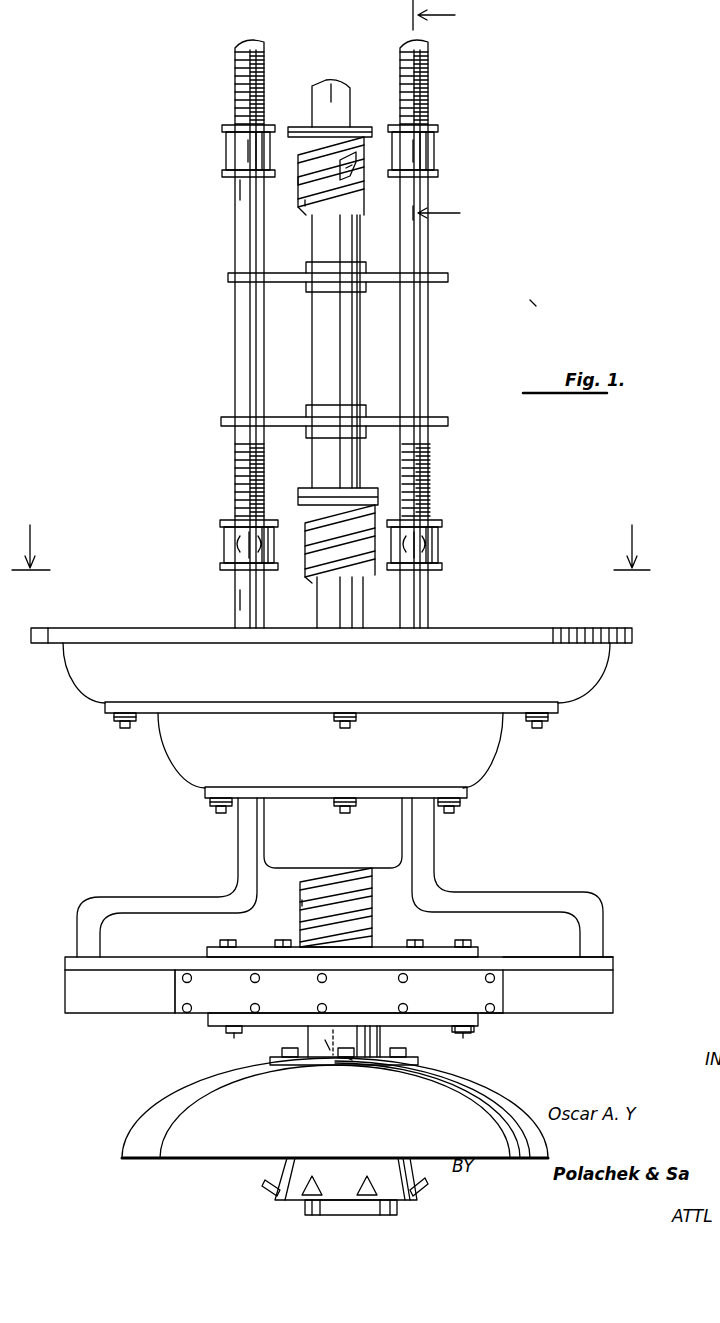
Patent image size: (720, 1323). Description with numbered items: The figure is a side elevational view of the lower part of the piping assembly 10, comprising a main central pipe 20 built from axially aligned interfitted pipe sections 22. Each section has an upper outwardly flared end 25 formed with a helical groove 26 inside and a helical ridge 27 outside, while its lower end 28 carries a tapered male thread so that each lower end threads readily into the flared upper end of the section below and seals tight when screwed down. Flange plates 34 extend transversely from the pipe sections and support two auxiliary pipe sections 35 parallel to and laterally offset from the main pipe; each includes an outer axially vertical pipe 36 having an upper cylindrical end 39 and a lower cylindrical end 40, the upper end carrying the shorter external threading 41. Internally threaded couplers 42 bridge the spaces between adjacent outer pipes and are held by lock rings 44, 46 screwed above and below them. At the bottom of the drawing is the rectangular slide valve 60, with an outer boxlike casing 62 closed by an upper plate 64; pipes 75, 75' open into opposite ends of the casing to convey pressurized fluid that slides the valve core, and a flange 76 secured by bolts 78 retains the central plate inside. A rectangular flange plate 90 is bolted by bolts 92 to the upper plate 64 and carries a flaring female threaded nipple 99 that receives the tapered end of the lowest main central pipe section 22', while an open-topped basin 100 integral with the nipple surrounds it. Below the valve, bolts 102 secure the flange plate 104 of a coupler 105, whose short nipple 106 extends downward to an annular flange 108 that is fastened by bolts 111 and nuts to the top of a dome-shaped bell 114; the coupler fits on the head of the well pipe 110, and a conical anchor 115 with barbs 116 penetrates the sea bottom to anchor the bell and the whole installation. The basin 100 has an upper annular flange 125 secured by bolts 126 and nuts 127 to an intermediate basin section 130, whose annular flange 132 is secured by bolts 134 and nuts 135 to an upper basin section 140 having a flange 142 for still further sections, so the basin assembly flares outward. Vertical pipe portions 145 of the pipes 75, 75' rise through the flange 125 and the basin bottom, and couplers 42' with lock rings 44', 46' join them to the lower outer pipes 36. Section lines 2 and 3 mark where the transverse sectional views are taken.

The section line 2- 2 is at (331, 535).
The section line 3- 3 is at (444, 112).
The piping assembly 10 is at (548, 295).
The main central pipe 20 is at (306, 236).
The pipe section 22 is at (341, 236).
The lowest main central pipe section 22' is at (317, 602).
The upper outwardly flared end 25 is at (310, 182).
The helical groove 26 is at (358, 160).
The helical ridge 27 is at (312, 203).
The lower end 28 is at (322, 540).
The flange plate 34 is at (440, 282).
The auxiliary pipe section 35 is at (232, 385).
The outer axially vertical pipe 36 is at (242, 340).
The upper cylindrical end 39 is at (250, 190).
The lower cylindrical end 40 is at (234, 510).
The upper threading 41 is at (242, 90).
The coupler 42 is at (317, 151).
The coupler 42' is at (315, 545).
The lock ring 44 is at (304, 122).
The lock ring 44' is at (286, 524).
The lock ring 46 is at (301, 166).
The lock ring 46' is at (291, 568).
The slide valve 60 is at (505, 1020).
The boxlike casing 62 is at (596, 988).
The upper plate 64 is at (526, 963).
The pipe 75 is at (525, 877).
The pipe 75' is at (167, 877).
The flange 76 is at (214, 1000).
The bolts 78 is at (240, 1034).
The rectangular flange plate 90 is at (400, 936).
The bolts 92 is at (428, 947).
The nipple 99 is at (364, 893).
The basin 100 is at (376, 832).
The bolts 102 is at (456, 1028).
The flange plate 104 is at (428, 1026).
The coupler 105 is at (328, 1056).
The short nipple 106 is at (380, 1036).
The annular flange 108 is at (272, 1061).
The well pipe 110 is at (398, 1207).
The bolts 111 is at (350, 1060).
The dome-shaped bell 114 is at (490, 1094).
The conical anchor 115 is at (408, 1172).
The barbs 116 is at (265, 1185).
The upper annular flange 125 is at (460, 792).
The bolts 126 is at (224, 814).
The nuts 127 is at (458, 806).
The intermediate basin section 130 is at (470, 758).
The annular flange 132 is at (548, 709).
The bolts 134 is at (548, 722).
The nuts 135 is at (535, 730).
The upper basin section 140 is at (560, 682).
The flange 142 is at (620, 628).
The vertical pipe portion 145 is at (242, 599).